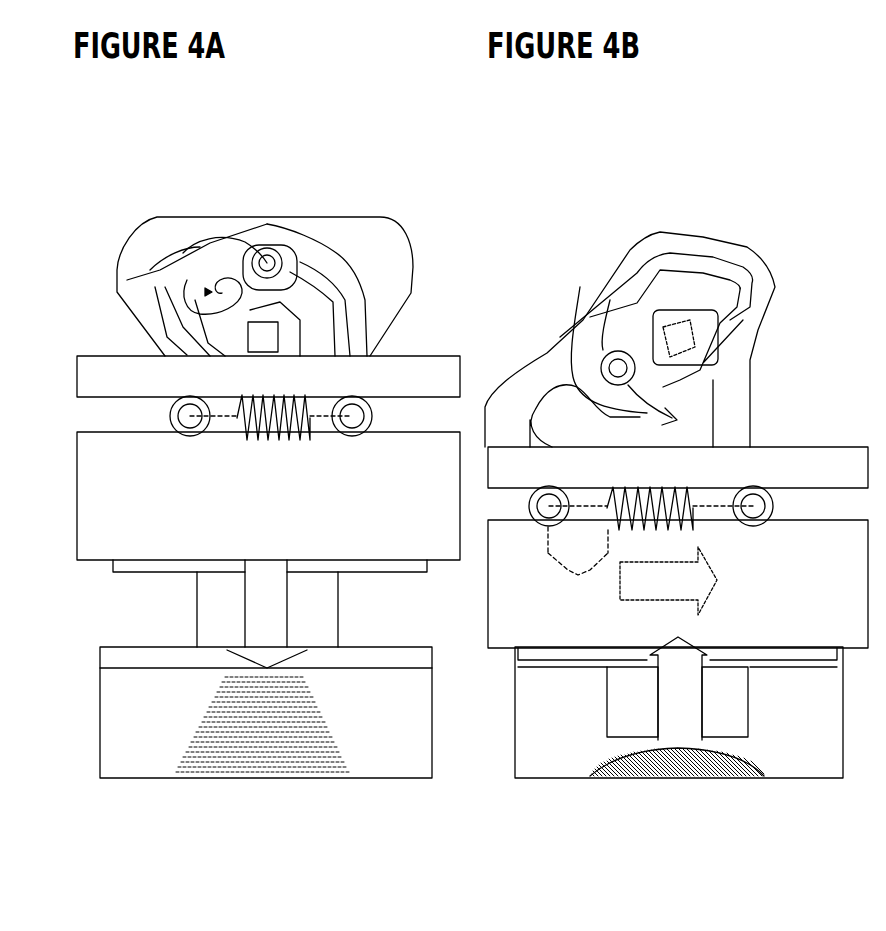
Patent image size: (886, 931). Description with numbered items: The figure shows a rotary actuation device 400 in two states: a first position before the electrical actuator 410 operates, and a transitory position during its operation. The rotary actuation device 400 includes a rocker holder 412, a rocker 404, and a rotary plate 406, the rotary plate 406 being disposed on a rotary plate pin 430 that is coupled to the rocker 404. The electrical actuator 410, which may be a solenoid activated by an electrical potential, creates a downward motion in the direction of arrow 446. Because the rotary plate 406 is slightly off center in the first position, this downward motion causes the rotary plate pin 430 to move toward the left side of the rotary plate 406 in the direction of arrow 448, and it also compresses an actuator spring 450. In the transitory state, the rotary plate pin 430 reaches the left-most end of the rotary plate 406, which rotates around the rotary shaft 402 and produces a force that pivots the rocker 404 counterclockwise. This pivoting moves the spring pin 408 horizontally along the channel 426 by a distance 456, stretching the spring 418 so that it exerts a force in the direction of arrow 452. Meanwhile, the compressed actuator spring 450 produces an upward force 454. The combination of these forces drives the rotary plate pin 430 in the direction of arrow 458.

In FIG. 4A, the rotary actuation device 400 is at (333, 156).
In FIG. 4B, the rotary actuation device 400 is at (740, 212).
In FIG. 4B, the rotary shaft 402 is at (707, 317).
In FIG. 4A, the rocker 404 is at (193, 218).
In FIG. 4B, the rocker 404 is at (753, 388).
In FIG. 4A, the rotary plate 406 is at (267, 224).
In FIG. 4B, the rotary plate 406 is at (673, 232).
In FIG. 4A, the spring pin 408 is at (203, 437).
In FIG. 4B, the spring pin 408 is at (548, 530).
In FIG. 4A, the electrical actuator 410 is at (382, 780).
In FIG. 4B, the electrical actuator 410 is at (820, 778).
In FIG. 4A, the rocker holder 412 is at (413, 357).
In FIG. 4B, the spring 418 is at (695, 517).
In FIG. 4B, the channel 426 is at (481, 518).
In FIG. 4A, the rotary plate pin 430 is at (272, 250).
In FIG. 4B, the rotary plate pin 430 is at (620, 355).
In FIG. 4A, the arrow 446 is at (290, 606).
In FIG. 4A, the arrow 448 is at (235, 292).
In FIG. 4A, the actuator spring 450 is at (323, 722).
In FIG. 4B, the actuator spring 450 is at (733, 758).
In FIG. 4B, the arrow 452 is at (705, 603).
In FIG. 4B, the upward force 454 is at (660, 712).
In FIG. 4B, the distance 456 is at (578, 567).
In FIG. 4B, the arrow 458 is at (647, 398).